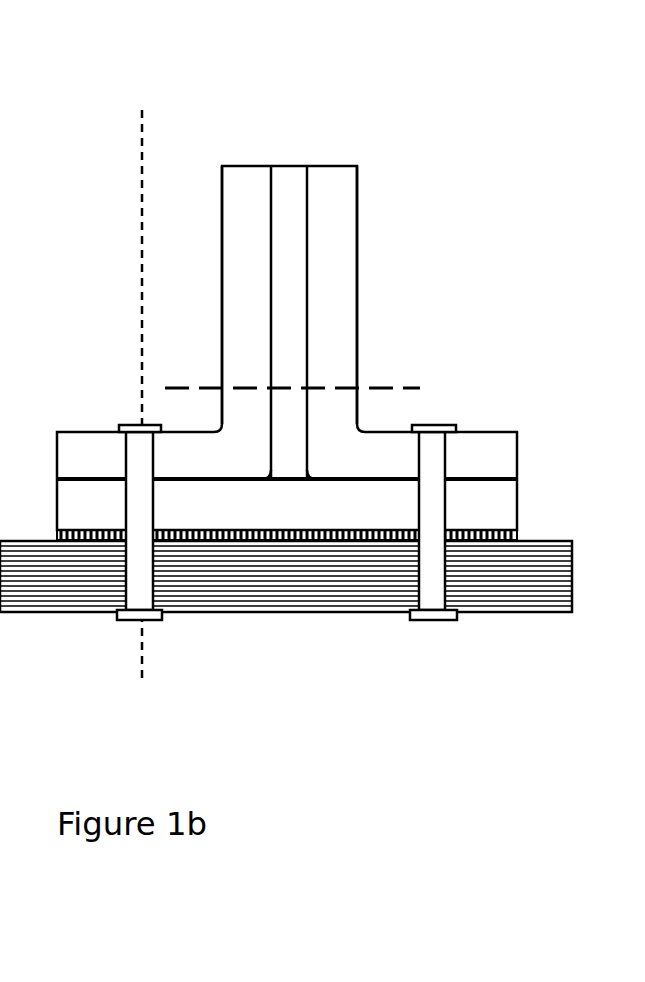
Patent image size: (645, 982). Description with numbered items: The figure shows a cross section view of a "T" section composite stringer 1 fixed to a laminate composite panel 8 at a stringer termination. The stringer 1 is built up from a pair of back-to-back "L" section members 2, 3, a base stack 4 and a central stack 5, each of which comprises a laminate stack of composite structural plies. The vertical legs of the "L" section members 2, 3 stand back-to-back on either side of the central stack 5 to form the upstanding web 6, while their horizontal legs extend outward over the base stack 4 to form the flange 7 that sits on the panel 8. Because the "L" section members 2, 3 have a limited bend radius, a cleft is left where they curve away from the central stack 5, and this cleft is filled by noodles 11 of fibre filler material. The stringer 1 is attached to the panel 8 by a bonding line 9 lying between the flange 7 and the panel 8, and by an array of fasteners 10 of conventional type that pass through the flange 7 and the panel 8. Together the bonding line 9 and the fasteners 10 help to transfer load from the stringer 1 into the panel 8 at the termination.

The composite stringer 1 is at (311, 377).
The "L" section member 2 is at (343, 295).
The "L" section member 3 is at (250, 260).
The base stack 4 is at (495, 493).
The central stack 5 is at (285, 180).
The upstanding web 6 is at (316, 283).
The flange 7 is at (335, 528).
The laminate composite panel 8 is at (532, 574).
The bonding line 9 is at (518, 537).
The fasteners 10 is at (146, 468).
The noodles 11 is at (262, 480).